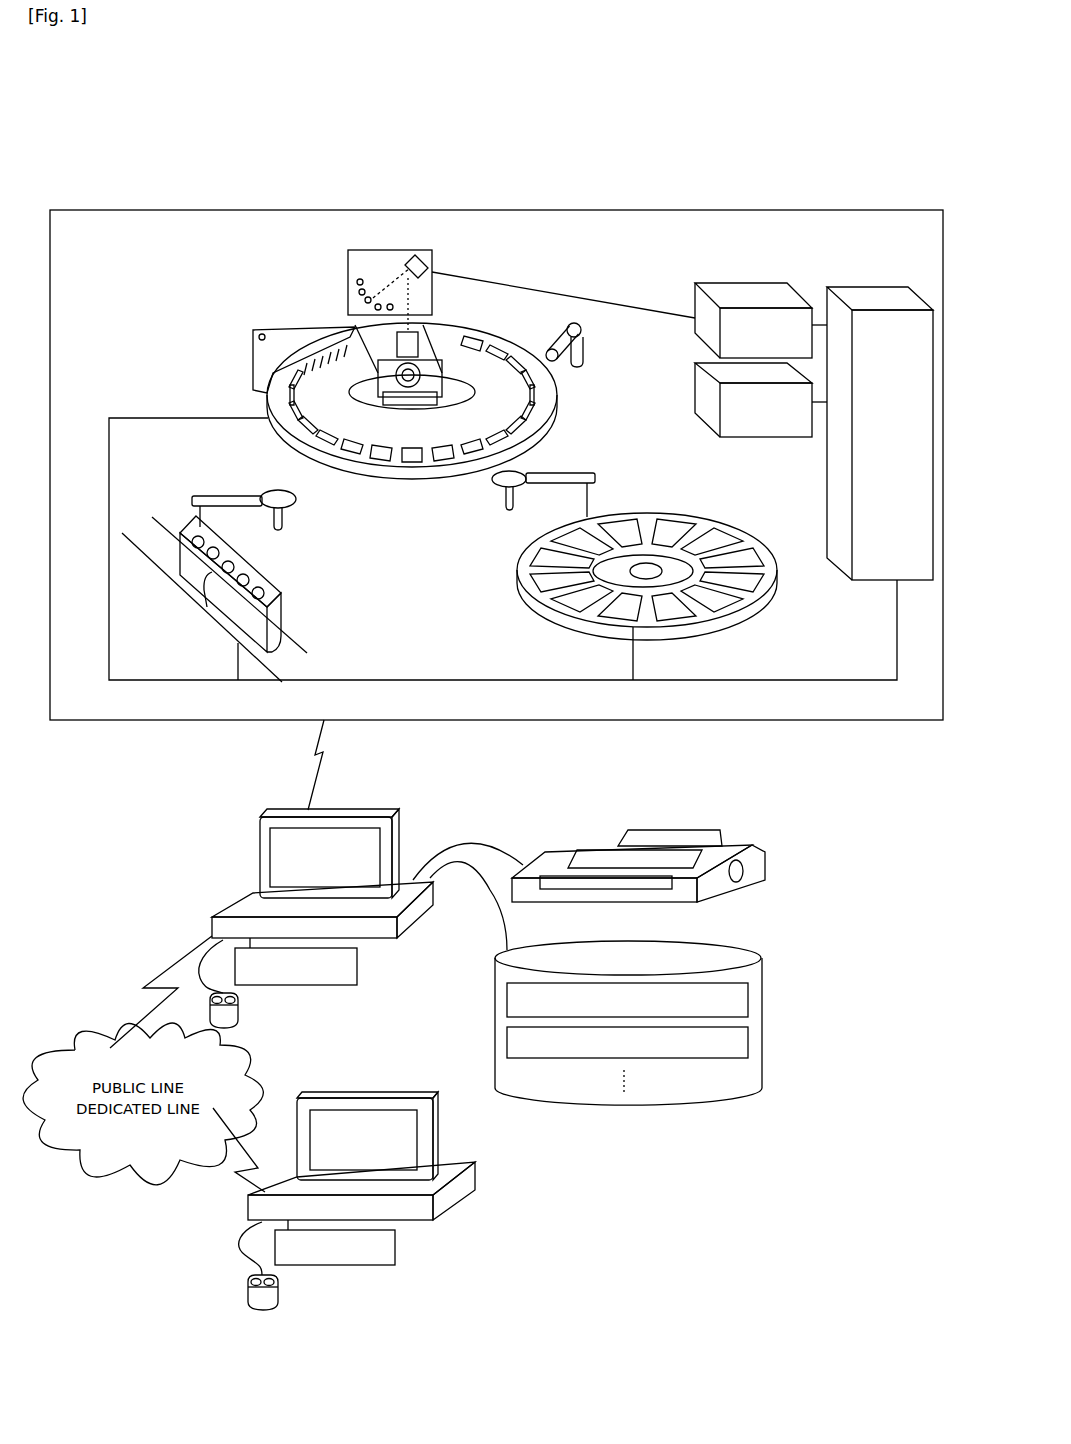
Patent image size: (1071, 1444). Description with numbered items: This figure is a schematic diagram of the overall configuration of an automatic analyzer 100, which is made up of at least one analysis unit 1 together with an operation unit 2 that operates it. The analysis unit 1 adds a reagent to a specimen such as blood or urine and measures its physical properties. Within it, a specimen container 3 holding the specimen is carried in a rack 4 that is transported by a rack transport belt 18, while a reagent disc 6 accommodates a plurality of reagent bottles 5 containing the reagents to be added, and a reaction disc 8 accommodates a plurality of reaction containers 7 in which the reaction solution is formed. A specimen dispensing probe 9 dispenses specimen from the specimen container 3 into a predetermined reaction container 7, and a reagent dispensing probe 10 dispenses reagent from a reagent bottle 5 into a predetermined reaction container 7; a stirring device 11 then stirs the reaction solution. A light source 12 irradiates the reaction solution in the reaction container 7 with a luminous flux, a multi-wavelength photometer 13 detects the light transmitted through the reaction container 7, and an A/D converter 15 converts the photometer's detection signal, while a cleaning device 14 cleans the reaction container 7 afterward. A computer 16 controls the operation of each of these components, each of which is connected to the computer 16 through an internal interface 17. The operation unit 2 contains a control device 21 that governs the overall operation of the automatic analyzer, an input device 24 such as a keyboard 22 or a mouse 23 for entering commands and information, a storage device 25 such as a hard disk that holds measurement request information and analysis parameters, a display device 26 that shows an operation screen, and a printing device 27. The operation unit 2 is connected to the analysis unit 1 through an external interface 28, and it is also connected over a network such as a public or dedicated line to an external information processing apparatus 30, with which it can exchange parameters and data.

The automatic analyzer 100 is at (700, 93).
The analysis unit 1 is at (115, 210).
The operation unit 2 is at (172, 873).
The specimen container 3 is at (212, 612).
The rack 4 is at (282, 615).
The reagent bottle 5 is at (649, 596).
The reagent disc 6 is at (768, 598).
The reaction container 7 is at (503, 353).
The reaction disc 8 is at (500, 353).
The specimen dispensing probe 9 is at (297, 500).
The reagent dispensing probe 10 is at (552, 462).
The stirring device 11 is at (582, 350).
The light source 12 is at (420, 368).
The multi-wavelength photometer 13 is at (348, 275).
The cleaning device 14 is at (265, 338).
The A/D converter 15 is at (760, 283).
The computer 16 is at (775, 437).
The internal interface 17 is at (868, 287).
The rack transport belt 18 is at (153, 520).
The control device 21 is at (410, 918).
The keyboard 22 is at (283, 985).
The mouse 23 is at (238, 1020).
The input device 24 is at (350, 1015).
The storage device 25 is at (765, 972).
The display device 26 is at (400, 803).
The printing device 27 is at (767, 843).
The external interface 28 is at (315, 752).
The external information processing apparatus 30 is at (488, 1197).